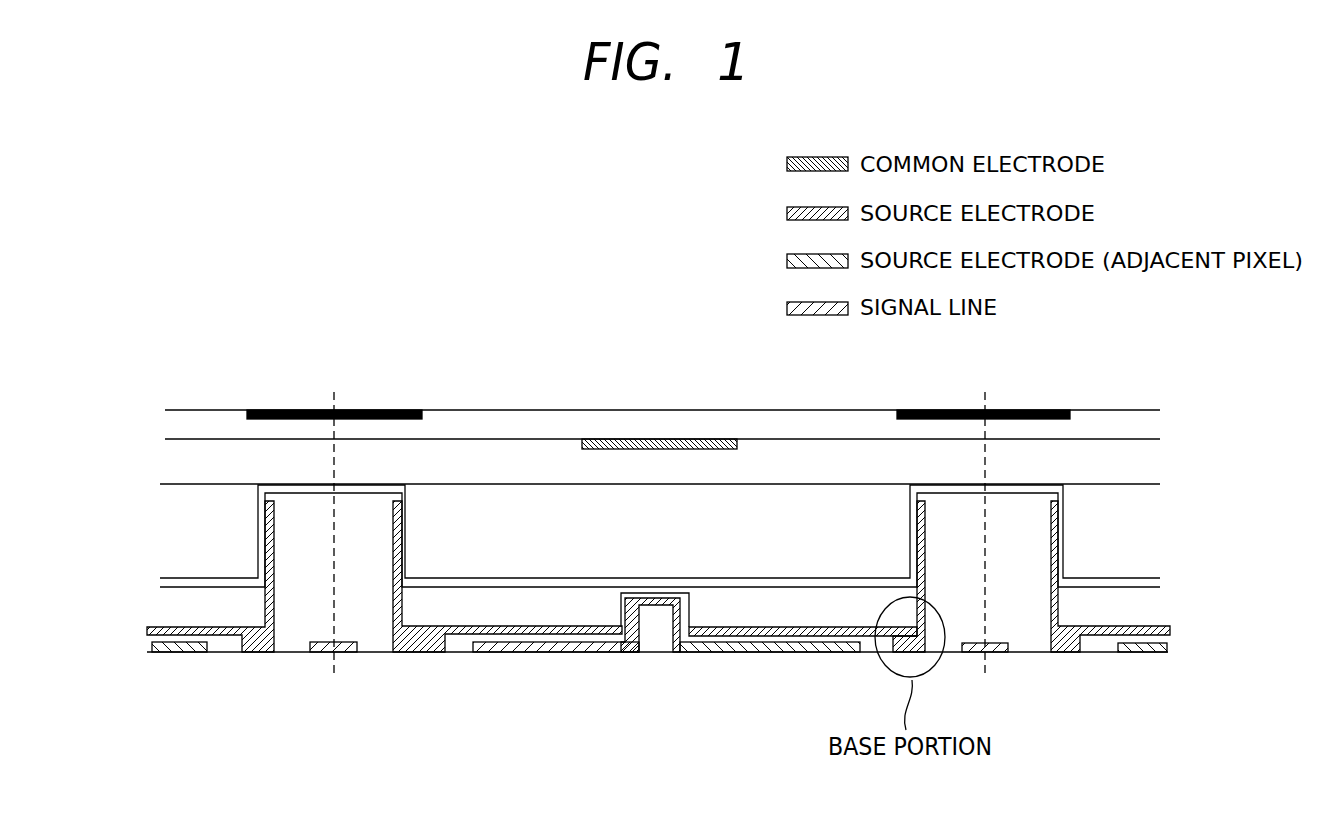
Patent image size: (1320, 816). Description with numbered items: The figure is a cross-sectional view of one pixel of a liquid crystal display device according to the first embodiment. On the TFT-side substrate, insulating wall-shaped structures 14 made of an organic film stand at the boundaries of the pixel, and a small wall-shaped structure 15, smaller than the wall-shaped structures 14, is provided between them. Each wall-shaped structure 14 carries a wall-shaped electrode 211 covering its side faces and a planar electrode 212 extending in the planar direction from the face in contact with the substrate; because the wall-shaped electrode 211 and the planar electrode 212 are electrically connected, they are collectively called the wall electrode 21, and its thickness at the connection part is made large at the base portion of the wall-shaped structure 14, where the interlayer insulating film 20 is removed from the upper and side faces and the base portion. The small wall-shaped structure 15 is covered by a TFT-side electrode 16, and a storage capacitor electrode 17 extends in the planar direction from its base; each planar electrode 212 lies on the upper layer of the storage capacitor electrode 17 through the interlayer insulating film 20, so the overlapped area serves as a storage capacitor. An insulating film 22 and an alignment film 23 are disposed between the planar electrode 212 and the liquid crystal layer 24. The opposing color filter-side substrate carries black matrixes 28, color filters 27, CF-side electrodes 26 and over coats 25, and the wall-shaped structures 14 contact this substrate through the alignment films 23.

The wall-shaped structure 14 is at (1024, 612).
The small wall-shaped structure 15 is at (660, 628).
The TFT-side electrode 16 is at (650, 607).
The storage capacitor electrode 17 is at (517, 652).
The interlayer insulating film 20 is at (868, 644).
The wall electrode 21 is at (807, 576).
The wall-shaped electrode 211 is at (918, 526).
The planar electrode 212 is at (803, 589).
The insulating film 22 is at (422, 602).
The alignment film 23 is at (213, 580).
The liquid crystal layer 24 is at (480, 502).
The over coat 25 is at (185, 464).
The CF-side electrode 26 is at (632, 439).
The color filter 27 is at (196, 417).
The black matrix 28 is at (365, 408).